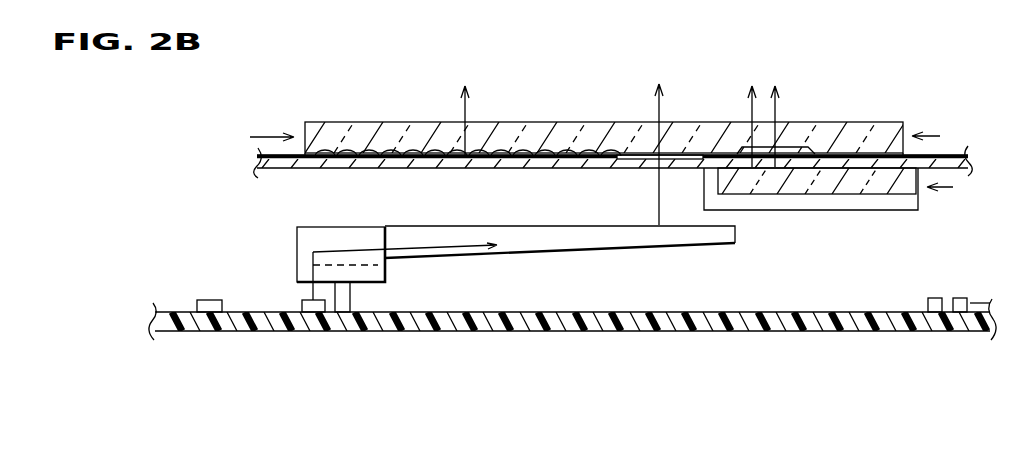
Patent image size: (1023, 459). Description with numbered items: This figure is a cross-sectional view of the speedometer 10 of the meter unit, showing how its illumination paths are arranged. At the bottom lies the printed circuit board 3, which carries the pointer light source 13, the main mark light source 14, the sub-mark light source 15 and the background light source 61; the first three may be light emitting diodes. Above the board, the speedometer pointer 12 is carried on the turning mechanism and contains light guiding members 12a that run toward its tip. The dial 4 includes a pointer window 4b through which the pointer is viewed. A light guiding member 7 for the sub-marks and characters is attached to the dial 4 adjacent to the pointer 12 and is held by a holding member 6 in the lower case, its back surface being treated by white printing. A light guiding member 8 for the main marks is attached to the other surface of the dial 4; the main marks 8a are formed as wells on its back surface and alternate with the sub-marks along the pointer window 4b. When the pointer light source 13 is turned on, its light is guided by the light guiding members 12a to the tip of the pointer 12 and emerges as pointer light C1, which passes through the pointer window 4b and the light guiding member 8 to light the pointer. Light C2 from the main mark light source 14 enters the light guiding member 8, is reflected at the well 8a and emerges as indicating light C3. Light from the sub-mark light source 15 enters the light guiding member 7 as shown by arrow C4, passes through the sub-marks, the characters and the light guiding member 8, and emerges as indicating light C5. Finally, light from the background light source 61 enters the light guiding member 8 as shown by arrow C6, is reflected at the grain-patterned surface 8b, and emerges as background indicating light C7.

The printed circuit board 3 is at (170, 325).
The dial 4 is at (945, 168).
The pointer window 4b is at (632, 155).
The holding member 6 is at (872, 210).
The light guiding member for sub-marks and characters 7 is at (767, 187).
The light guiding member for main marks 8 is at (865, 122).
The main marks 8a is at (808, 150).
The grain-patterned surface 8b is at (400, 150).
The speedometer 10 is at (398, 282).
The speedometer pointer 12 is at (523, 255).
The light guiding members 12a is at (300, 265).
The pointer light source 13 is at (315, 330).
The main mark light source 14 is at (978, 331).
The sub-mark light source 15 is at (921, 308).
The background light source 61 is at (230, 328).
The pointer light C1 is at (657, 105).
The main mark light C2 is at (935, 135).
The main mark indicating light C3 is at (798, 95).
The sub-mark light C4 is at (947, 188).
The sub-mark indicating light C5 is at (750, 105).
The background light C6 is at (268, 135).
The background indicating light C7 is at (463, 107).